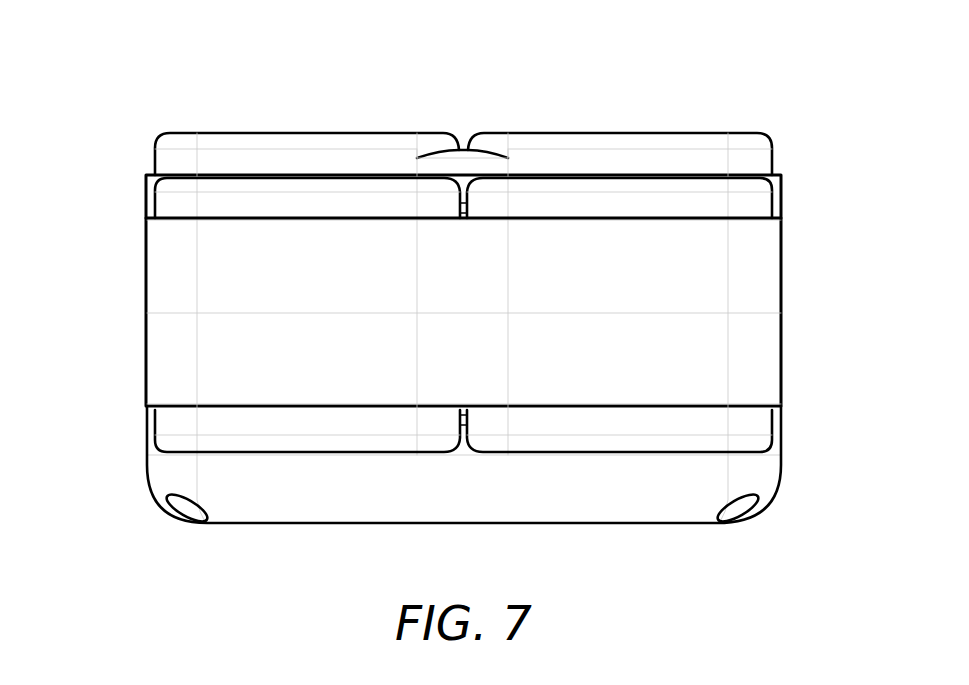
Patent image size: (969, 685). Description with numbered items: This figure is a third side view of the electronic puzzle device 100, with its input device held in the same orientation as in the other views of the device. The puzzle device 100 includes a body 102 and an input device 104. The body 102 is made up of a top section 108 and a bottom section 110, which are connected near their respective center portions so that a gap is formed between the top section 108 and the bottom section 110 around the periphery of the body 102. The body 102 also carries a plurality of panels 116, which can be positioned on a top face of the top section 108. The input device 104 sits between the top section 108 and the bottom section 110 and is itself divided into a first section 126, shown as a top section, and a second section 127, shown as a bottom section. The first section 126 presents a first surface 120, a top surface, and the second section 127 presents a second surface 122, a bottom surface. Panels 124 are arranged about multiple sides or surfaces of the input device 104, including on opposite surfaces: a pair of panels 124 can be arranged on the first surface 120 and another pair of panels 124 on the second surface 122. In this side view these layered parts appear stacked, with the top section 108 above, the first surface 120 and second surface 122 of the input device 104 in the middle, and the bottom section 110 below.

The electronic puzzle device 100 is at (645, 52).
The body 102 is at (775, 130).
The input device 104 is at (758, 258).
The top section 108 is at (232, 146).
The bottom section 110 is at (267, 505).
The panels 116 is at (750, 162).
The first surface 120 is at (177, 183).
The second surface 122 is at (163, 453).
The panels 124 is at (750, 202).
The first section 126 is at (168, 272).
The second section 127 is at (172, 365).